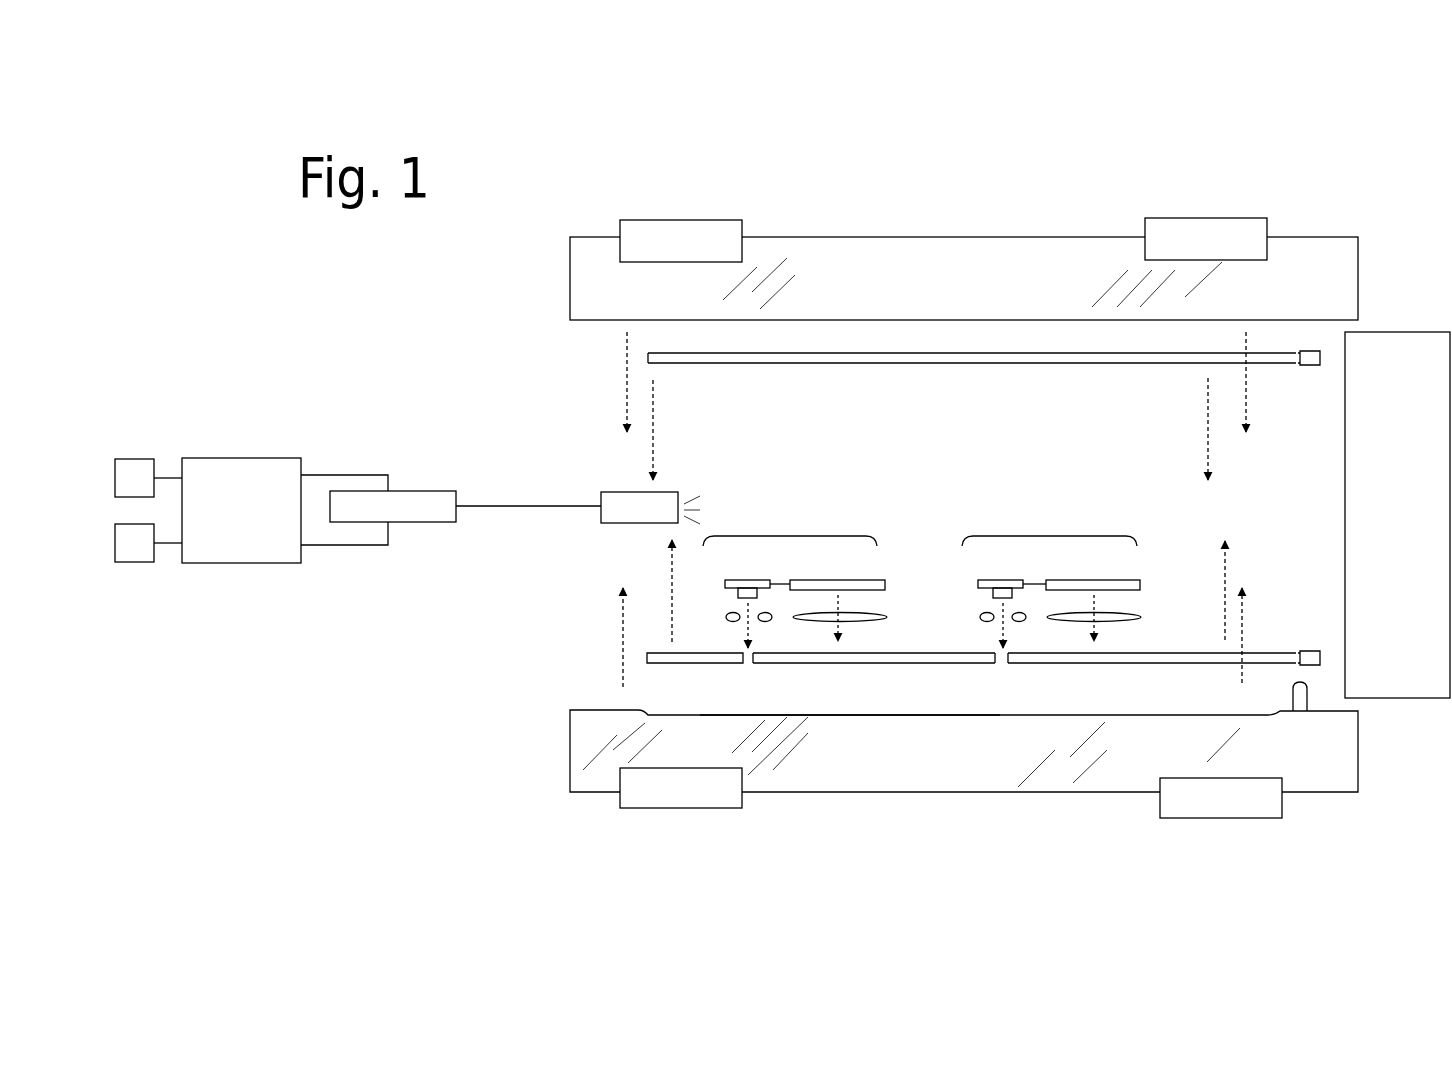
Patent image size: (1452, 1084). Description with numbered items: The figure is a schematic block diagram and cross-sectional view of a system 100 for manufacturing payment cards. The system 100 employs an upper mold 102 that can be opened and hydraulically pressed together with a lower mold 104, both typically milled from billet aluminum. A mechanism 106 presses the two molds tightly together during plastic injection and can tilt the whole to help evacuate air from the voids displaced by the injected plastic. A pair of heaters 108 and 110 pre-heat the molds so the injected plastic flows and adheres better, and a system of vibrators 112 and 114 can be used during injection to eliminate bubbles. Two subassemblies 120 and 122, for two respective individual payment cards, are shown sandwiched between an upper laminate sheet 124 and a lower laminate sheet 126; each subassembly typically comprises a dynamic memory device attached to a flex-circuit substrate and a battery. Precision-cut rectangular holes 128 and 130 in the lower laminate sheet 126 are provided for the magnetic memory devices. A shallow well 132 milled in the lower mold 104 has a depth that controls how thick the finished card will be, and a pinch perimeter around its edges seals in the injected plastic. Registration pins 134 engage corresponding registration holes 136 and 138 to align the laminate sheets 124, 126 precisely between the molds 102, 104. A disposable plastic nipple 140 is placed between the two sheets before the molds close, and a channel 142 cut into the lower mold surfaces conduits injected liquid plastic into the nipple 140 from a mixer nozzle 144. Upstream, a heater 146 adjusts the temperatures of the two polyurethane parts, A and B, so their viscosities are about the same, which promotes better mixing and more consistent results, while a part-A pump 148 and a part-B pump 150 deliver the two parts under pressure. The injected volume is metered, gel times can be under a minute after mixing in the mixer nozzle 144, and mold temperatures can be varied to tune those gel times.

The system 100 is at (270, 351).
The upper mold 102 is at (570, 290).
The lower mold 104 is at (570, 745).
The mechanism 106 is at (1383, 575).
The heater 108 is at (686, 222).
The heater 110 is at (640, 809).
The vibrator 112 is at (1197, 218).
The vibrator 114 is at (1160, 805).
The subassembly 120 is at (781, 534).
The subassembly 122 is at (1042, 534).
The upper laminate sheet 124 is at (668, 364).
The lower laminate sheet 126 is at (661, 664).
The rectangular hole 128 is at (751, 664).
The rectangular hole 130 is at (990, 664).
The shallow well 132 is at (857, 714).
The registration pins 134 is at (1291, 699).
The registration hole 136 is at (1293, 651).
The registration hole 138 is at (1295, 366).
The disposable plastic nipple 140 is at (599, 498).
The channel 142 is at (483, 508).
The mixer nozzle 144 is at (413, 491).
The heater 146 is at (222, 458).
The part-A pump 148 is at (117, 458).
The part-B pump 150 is at (118, 562).